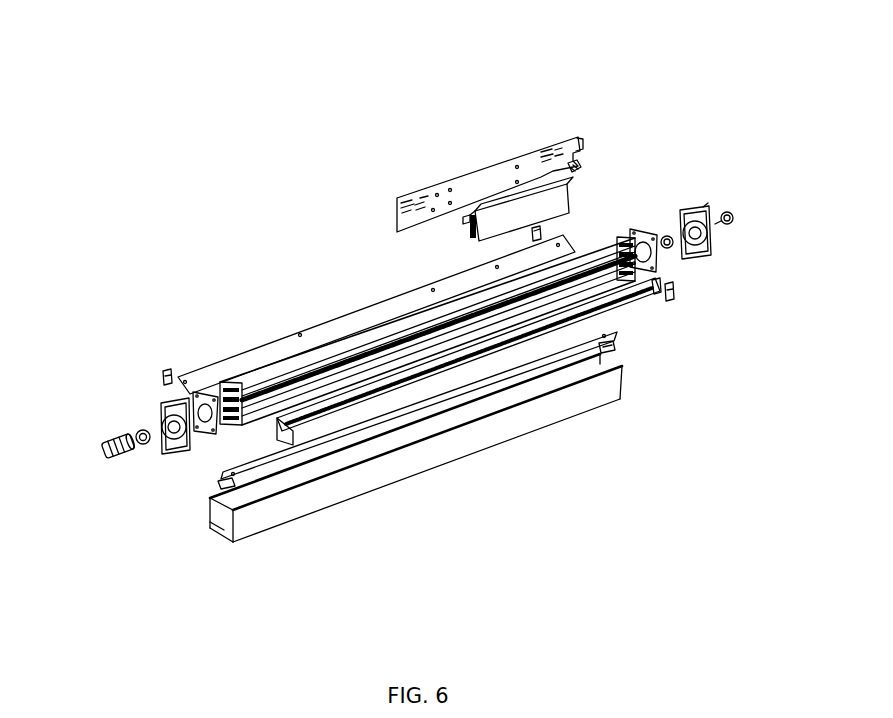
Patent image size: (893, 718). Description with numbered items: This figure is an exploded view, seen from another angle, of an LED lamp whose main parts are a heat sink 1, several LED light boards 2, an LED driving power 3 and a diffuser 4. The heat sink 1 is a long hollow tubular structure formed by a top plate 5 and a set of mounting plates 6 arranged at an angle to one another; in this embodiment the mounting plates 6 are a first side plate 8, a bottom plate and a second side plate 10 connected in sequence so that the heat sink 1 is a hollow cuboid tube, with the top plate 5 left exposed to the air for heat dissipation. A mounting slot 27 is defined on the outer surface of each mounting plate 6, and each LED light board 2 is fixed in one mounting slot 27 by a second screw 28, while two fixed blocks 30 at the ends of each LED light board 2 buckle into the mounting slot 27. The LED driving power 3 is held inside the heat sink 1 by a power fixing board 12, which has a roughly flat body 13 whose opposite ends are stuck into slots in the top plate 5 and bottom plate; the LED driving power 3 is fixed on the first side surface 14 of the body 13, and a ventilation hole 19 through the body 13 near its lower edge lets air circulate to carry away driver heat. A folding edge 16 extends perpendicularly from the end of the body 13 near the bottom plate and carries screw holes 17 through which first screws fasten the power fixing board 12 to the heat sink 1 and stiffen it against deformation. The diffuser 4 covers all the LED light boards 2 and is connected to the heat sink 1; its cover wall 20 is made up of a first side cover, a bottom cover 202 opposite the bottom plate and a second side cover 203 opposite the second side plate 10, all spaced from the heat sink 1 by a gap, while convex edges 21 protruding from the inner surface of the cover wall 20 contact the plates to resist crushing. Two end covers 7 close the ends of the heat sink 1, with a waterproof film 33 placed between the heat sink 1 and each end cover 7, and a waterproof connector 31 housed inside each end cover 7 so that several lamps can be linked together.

The heat sink 1 is at (402, 329).
The LED light board 2 is at (263, 355).
The LED driving power 3 is at (497, 212).
The diffuser 4 is at (523, 433).
The top plate 5 is at (355, 345).
The mounting plate 6 is at (223, 387).
The end cover 7 is at (708, 235).
The first side plate 8 is at (240, 423).
The second side plate 10 is at (172, 373).
The power fixing board 12 is at (506, 128).
The body 13 is at (563, 137).
The first side surface 14 is at (447, 200).
The folding edge 16 is at (627, 113).
The screw hole 17 is at (580, 167).
The ventilation hole 19 is at (548, 140).
The cover wall 20 is at (388, 500).
The convex edge 21 is at (212, 538).
The mounting slot 27 is at (643, 293).
The second screw 28 is at (617, 335).
The fixed block 30 is at (673, 295).
The waterproof connector 31 is at (667, 233).
The waterproof film 33 is at (655, 255).
The bottom cover 202 is at (223, 541).
The second side cover 203 is at (225, 493).